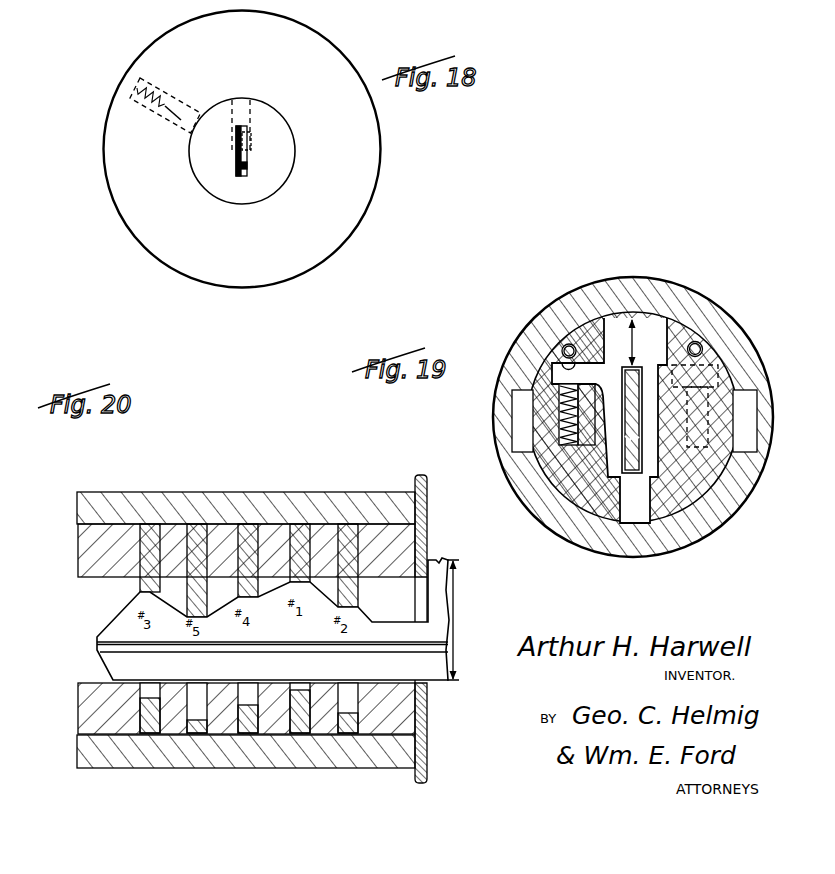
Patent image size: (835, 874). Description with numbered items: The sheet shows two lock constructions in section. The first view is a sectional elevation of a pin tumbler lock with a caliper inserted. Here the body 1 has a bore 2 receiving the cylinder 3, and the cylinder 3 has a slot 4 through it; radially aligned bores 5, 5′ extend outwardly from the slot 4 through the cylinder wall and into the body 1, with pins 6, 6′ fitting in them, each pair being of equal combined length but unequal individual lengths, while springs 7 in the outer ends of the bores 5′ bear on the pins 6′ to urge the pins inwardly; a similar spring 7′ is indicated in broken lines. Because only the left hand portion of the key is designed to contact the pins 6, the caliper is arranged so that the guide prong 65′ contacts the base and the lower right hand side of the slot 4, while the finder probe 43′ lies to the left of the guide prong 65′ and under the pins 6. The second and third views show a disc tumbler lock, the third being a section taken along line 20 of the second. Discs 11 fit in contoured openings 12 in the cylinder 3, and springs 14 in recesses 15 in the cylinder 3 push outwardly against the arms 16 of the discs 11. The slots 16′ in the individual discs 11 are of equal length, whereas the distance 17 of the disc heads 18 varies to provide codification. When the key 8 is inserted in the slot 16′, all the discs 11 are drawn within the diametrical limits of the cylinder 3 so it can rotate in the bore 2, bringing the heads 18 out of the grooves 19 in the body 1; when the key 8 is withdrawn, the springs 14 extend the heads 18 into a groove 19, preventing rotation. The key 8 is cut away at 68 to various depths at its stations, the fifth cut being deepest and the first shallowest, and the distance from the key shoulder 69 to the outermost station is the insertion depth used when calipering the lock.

In FIG. 18, the body 1 is at (366, 213).
In FIG. 19, the body 1 is at (717, 318).
In FIG. 20, the body 1 is at (235, 498).
In FIG. 18, the bore 2 is at (236, 205).
In FIG. 19, the bore 2 is at (530, 355).
In FIG. 20, the bore 2 is at (100, 522).
In FIG. 18, the cylinder 3 is at (262, 186).
In FIG. 19, the cylinder 3 is at (700, 362).
In FIG. 20, the cylinder 3 is at (78, 544).
In FIG. 18, the slot 4 is at (247, 153).
In FIG. 18, the bore 5 is at (250, 113).
In FIG. 18, the pin 6 is at (239, 126).
In FIG. 18, the spring 7 is at (132, 88).
In FIG. 18, the bore 5′ is at (177, 127).
In FIG. 18, the pin 6′ is at (150, 122).
In FIG. 18, the spring 7′ is at (232, 164).
In FIG. 18, the finder probe 43′ is at (248, 140).
In FIG. 18, the guide prong 65′ is at (248, 167).
In FIG. 19, the key 8 is at (640, 342).
In FIG. 19, the disc 11 is at (609, 377).
In FIG. 20, the disc 11 is at (150, 528).
In FIG. 19, the slot or opening 12 is at (603, 460).
In FIG. 20, the slot or opening 12 is at (140, 585).
In FIG. 19, the spring 14 is at (557, 415).
In FIG. 19, the recess 15 is at (557, 403).
In FIG. 20, the recess 15 is at (127, 687).
In FIG. 19, the arm 16 is at (590, 372).
In FIG. 19, the slot or opening 16′ is at (665, 405).
In FIG. 19, the distance 17 is at (636, 332).
In FIG. 19, the disc head 18 is at (648, 318).
In FIG. 19, the groove 19 is at (748, 410).
In FIG. 20, the groove 19 is at (308, 463).
In FIG. 19, the section line 20 is at (628, 237).
In FIG. 20, the cut 68 is at (454, 603).
In FIG. 20, the key shoulder 69 is at (449, 559).